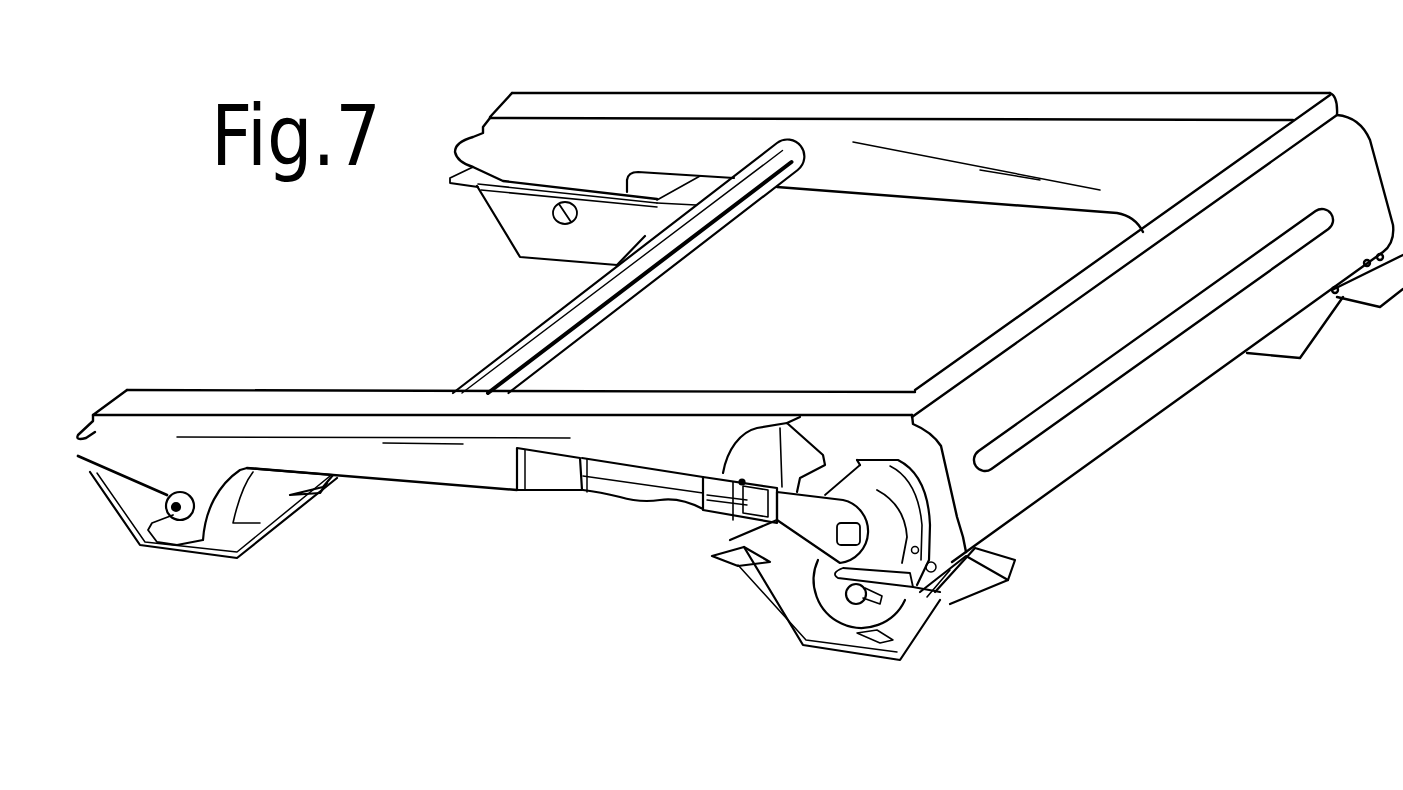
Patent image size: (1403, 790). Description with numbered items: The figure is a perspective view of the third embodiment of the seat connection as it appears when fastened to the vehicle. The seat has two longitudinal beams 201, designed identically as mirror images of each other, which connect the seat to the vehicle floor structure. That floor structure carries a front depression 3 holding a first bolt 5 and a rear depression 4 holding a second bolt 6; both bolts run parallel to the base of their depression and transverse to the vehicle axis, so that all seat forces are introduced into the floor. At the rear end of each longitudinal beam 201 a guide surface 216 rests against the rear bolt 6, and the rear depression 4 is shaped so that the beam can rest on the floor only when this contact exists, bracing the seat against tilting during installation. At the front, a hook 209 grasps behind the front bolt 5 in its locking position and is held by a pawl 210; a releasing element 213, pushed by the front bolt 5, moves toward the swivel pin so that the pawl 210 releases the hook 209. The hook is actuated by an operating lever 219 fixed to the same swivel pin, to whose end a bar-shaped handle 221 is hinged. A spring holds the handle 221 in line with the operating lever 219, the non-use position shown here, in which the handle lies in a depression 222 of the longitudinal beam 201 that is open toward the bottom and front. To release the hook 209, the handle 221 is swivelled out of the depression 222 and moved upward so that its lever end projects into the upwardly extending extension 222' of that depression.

The front depression 3 is at (797, 592).
The rear depression 4 is at (665, 185).
The first bolt 5 is at (857, 604).
The second bolt 6 is at (174, 512).
The longitudinal beam 201 is at (910, 168).
The hook 209 is at (837, 593).
The pawl 210 is at (910, 518).
The releasing element 213 is at (933, 603).
The guide surface 216 is at (140, 480).
The operating lever 219 is at (813, 515).
The handle 221 is at (657, 490).
The depression 222 is at (552, 502).
The extension 222' is at (778, 406).